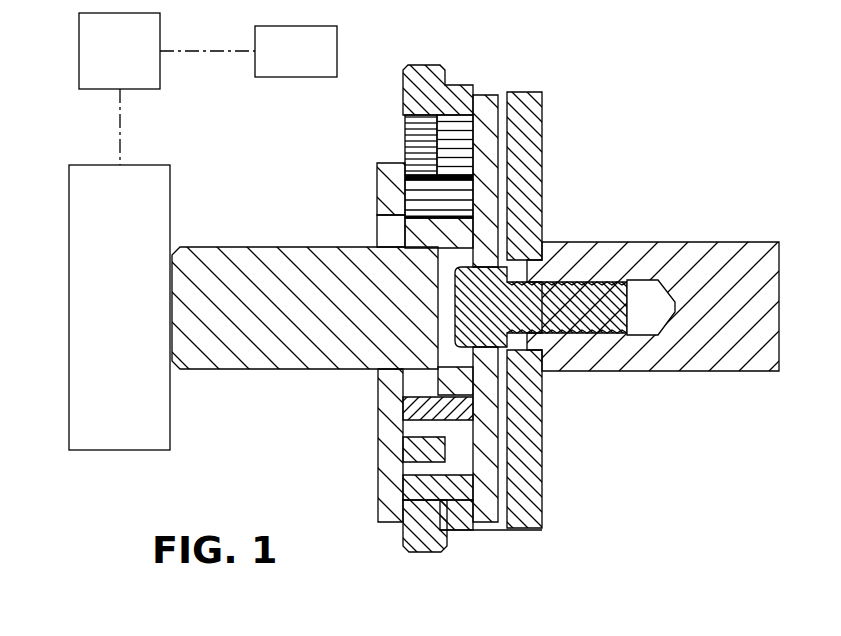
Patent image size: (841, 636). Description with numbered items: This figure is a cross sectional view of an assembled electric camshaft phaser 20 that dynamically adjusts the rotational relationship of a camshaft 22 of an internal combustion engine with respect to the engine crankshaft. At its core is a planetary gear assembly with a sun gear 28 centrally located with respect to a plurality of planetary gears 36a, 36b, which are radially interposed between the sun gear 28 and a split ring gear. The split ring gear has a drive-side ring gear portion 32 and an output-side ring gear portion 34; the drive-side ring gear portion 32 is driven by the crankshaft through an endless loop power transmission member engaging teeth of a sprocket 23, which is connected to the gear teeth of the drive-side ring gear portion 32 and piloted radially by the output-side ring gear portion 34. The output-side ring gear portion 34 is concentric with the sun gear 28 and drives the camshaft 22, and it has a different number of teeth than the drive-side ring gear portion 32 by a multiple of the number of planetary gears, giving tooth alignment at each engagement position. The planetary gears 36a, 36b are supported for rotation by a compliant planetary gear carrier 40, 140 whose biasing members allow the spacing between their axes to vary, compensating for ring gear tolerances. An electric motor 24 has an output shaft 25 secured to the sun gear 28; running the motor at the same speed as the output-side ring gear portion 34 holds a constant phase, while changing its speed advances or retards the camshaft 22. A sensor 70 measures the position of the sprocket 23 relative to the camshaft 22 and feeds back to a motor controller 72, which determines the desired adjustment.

The electric camshaft phaser 20 is at (672, 110).
The camshaft 22 is at (672, 242).
The sprocket 23 is at (428, 65).
The electric motor 24 is at (106, 320).
The output shaft 25 is at (222, 247).
The sun gear 28 is at (432, 396).
The drive-side ring gear portion 32 is at (405, 128).
The output-side ring gear portion 34 is at (455, 130).
The planetary gear 36a is at (442, 500).
The planetary gear 36b is at (418, 168).
The compliant planetary gear carrier 40 is at (378, 183).
The compliant planetary gear carrier 140 is at (480, 505).
The sensor 70 is at (284, 62).
The motor controller 72 is at (108, 64).